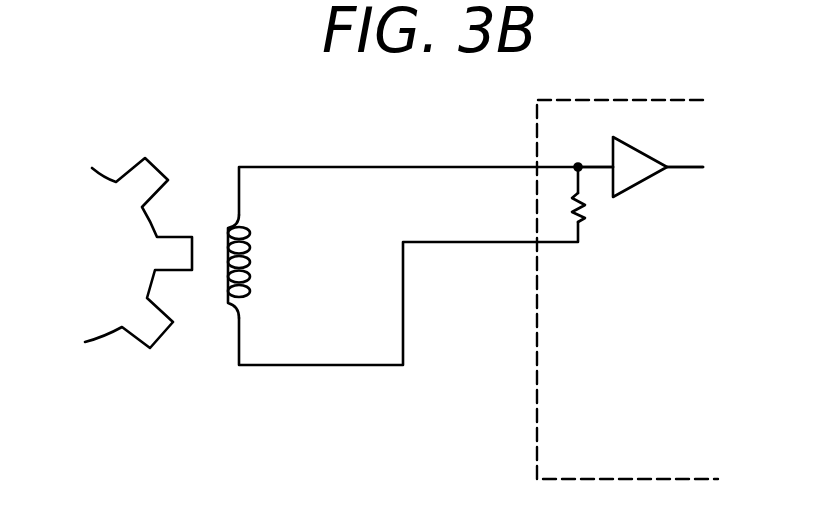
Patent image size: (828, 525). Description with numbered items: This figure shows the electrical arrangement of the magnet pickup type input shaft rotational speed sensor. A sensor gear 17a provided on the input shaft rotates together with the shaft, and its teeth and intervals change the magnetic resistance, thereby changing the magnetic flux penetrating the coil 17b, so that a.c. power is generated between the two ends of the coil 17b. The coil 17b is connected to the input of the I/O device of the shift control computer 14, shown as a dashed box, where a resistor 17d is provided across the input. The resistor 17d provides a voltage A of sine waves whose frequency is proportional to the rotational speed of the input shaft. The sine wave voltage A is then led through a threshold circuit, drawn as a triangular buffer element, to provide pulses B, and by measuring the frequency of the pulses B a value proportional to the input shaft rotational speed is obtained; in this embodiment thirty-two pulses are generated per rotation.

The sensor gear 17a is at (142, 337).
The coil 17b is at (230, 213).
The resistor 17d is at (585, 225).
The shift control computer 14 is at (632, 112).
The voltage A is at (593, 162).
The pulses B is at (688, 162).